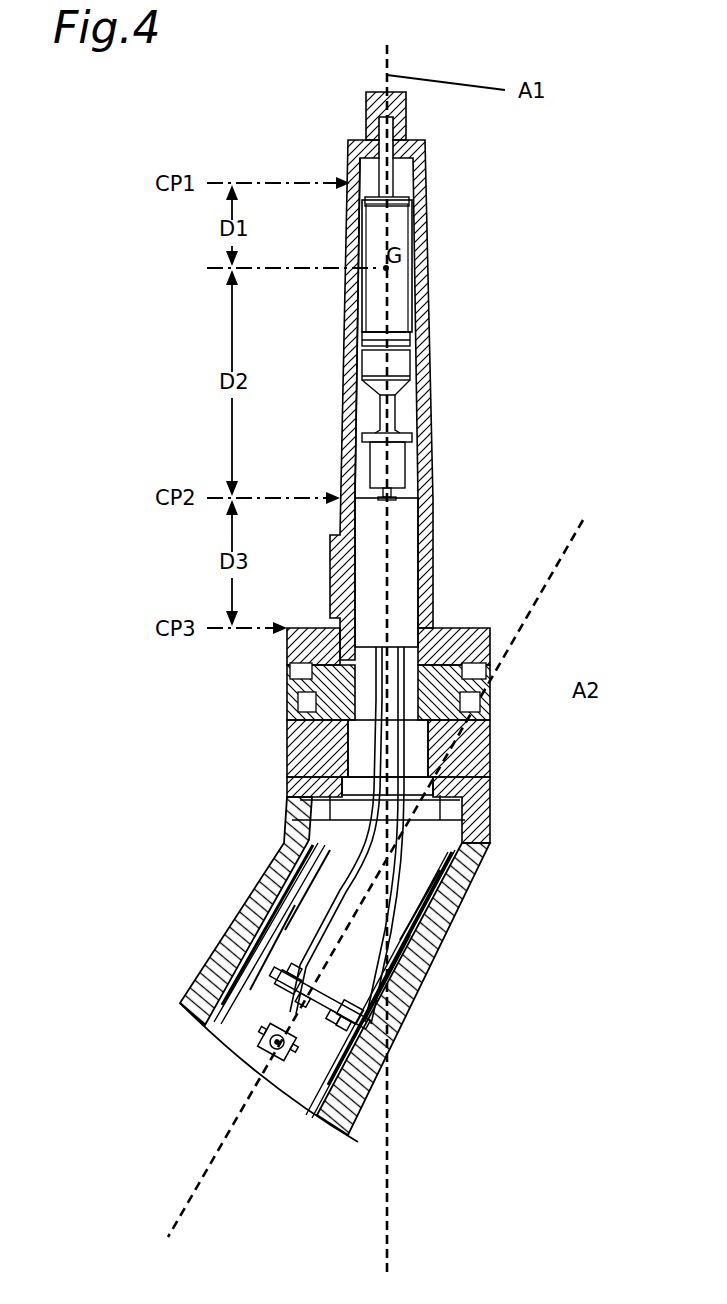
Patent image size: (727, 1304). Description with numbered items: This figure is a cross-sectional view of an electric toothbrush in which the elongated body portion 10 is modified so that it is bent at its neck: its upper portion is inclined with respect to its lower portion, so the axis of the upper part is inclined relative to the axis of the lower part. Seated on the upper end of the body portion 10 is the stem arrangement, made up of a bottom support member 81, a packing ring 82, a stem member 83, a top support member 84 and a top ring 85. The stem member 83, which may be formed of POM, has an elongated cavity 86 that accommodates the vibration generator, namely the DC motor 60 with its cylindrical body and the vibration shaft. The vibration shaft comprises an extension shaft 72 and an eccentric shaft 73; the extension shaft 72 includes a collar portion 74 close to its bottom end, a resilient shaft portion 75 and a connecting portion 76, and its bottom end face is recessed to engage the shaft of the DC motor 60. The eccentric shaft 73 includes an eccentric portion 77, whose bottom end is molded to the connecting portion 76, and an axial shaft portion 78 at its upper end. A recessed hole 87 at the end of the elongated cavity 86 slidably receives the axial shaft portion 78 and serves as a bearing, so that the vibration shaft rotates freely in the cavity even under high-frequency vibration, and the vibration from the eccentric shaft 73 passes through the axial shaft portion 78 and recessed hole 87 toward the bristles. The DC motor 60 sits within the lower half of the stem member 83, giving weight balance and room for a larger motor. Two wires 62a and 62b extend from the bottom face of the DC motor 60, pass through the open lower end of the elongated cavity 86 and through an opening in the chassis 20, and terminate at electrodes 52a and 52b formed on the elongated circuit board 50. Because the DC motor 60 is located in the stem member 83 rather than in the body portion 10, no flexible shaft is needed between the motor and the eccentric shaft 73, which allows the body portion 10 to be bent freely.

The elongated body portion 10 is at (263, 877).
The chassis 20 is at (267, 917).
The elongated circuit board 50 is at (262, 1040).
The electrode 52a is at (270, 982).
The electrode 52b is at (343, 1015).
The DC motor 60 is at (405, 562).
The wire 62a is at (377, 840).
The wire 62b is at (440, 838).
The extension shaft 72 is at (410, 370).
The eccentric shaft 73 is at (413, 280).
The collar portion 74 is at (395, 440).
The resilient shaft portion 75 is at (390, 412).
The connecting portion 76 is at (392, 358).
The eccentric portion 77 is at (385, 222).
The axial shaft portion 78 is at (385, 193).
The bottom support member 81 is at (303, 782).
The packing ring 82 is at (300, 740).
The stem member 83 is at (423, 157).
The top support member 84 is at (300, 662).
The top ring 85 is at (310, 627).
The elongated cavity 86 is at (360, 245).
The recessed hole 87 is at (370, 152).